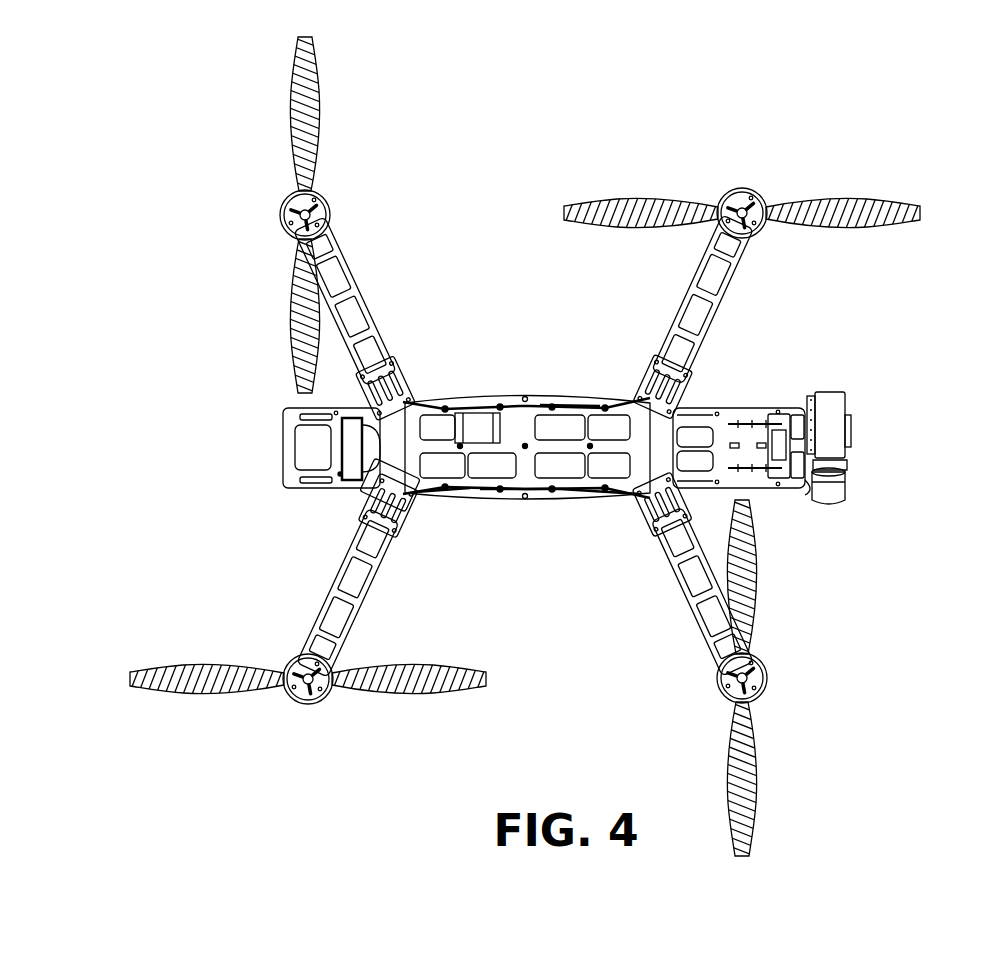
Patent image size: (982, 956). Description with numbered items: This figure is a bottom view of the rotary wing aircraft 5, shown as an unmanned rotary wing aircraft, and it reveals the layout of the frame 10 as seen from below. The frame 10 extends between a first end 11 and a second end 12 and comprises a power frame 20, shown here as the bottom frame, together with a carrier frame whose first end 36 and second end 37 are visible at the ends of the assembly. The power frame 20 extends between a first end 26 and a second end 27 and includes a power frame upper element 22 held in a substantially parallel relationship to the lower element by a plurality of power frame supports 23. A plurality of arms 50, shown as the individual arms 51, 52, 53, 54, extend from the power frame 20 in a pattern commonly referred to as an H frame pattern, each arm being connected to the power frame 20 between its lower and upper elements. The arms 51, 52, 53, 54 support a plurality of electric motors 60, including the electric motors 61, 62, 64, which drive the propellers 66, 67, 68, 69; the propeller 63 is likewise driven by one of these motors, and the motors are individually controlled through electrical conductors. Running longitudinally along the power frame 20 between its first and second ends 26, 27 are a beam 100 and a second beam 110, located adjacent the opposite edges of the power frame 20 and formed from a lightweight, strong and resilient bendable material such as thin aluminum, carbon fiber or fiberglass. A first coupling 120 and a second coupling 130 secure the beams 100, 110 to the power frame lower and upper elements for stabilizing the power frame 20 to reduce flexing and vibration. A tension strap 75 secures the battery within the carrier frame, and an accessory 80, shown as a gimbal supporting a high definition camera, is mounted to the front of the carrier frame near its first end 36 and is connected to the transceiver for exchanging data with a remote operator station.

The rotary wing aircraft 5 is at (152, 347).
The frame 10 is at (283, 464).
The first end 11 is at (790, 492).
The second end 12 is at (283, 432).
The power frame 20 is at (414, 397).
The power frame upper element 22 is at (515, 492).
The power frame supports 23 is at (497, 403).
The first end 26 is at (700, 403).
The second end 27 is at (356, 497).
The first end 36 is at (790, 407).
The second end 37 is at (290, 478).
The arms 50 is at (752, 316).
The arm 51 is at (700, 286).
The arm 52 is at (357, 273).
The arm 53 is at (690, 600).
The arm 54 is at (330, 596).
The electric motors 60 is at (812, 178).
The electric motor 61 is at (741, 190).
The electric motor 62 is at (330, 207).
The propeller 63 is at (756, 774).
The electric motor 64 is at (291, 661).
The propeller 66 is at (646, 205).
The propeller 67 is at (294, 118).
The propeller 68 is at (767, 674).
The propeller 69 is at (392, 692).
The tension strap 75 is at (340, 474).
The accessory 80 is at (907, 396).
The beam 100 is at (468, 410).
The second beam 110 is at (606, 493).
The first coupling 120 is at (582, 403).
The second coupling 130 is at (472, 496).